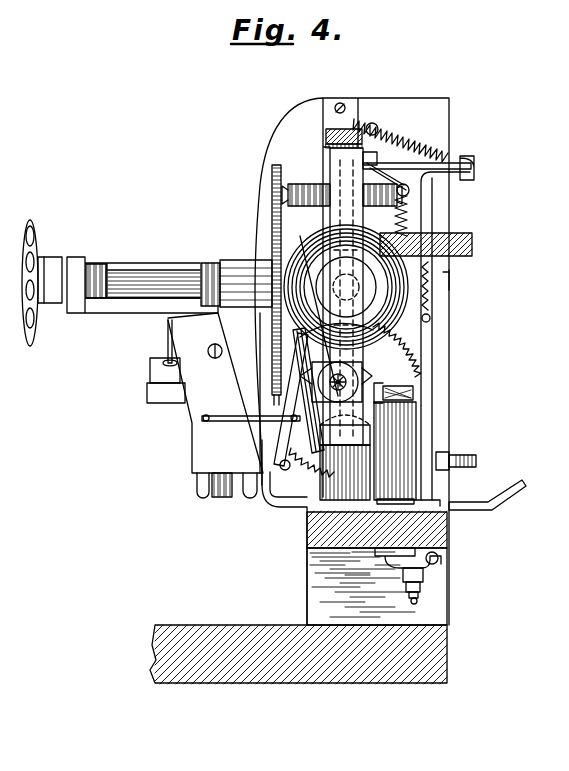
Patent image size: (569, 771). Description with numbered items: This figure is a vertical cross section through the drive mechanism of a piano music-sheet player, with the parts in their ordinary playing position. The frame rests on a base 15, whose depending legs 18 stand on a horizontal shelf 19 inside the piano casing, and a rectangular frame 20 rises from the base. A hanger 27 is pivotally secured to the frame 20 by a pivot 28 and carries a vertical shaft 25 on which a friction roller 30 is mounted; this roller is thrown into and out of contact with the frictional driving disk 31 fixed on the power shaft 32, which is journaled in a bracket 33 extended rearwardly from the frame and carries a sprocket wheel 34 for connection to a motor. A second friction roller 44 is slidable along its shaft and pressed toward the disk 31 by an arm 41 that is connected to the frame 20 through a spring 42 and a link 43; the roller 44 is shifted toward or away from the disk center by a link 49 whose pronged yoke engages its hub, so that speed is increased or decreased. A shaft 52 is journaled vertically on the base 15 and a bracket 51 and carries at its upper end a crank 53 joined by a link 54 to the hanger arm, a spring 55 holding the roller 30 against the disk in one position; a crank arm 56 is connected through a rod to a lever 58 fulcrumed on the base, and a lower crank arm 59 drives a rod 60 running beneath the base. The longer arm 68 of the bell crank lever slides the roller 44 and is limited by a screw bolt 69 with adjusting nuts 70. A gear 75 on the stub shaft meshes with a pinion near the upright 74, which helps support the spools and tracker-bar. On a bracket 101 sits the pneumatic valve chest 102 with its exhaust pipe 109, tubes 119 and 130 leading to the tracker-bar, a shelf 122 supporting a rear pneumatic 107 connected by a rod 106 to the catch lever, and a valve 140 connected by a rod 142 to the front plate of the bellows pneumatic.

The rectangular frame 20 is at (325, 136).
The hanger 27 is at (330, 150).
The friction roller 30 is at (292, 186).
The frictional driving disk 31 is at (273, 188).
The friction roller 44 is at (292, 250).
The bracket 33 is at (84, 257).
The sprocket wheel 34 is at (37, 231).
The power shaft 32 is at (148, 272).
The spring 55 is at (405, 167).
The link 54 is at (396, 182).
The link 43 is at (440, 160).
The crank 53 is at (476, 172).
The spring 42 is at (432, 212).
The bracket 51 is at (471, 244).
The upright 74 is at (450, 276).
The arm 41 is at (398, 313).
The vertical shaft 25 is at (386, 320).
The gear 75 is at (418, 346).
The link 49 is at (366, 362).
The shaft 52 is at (414, 392).
The pivot 28 is at (418, 408).
The longer arm 68 is at (471, 466).
The lever 58 is at (524, 482).
The crank arm 56 is at (445, 526).
The base 15 is at (450, 544).
The depending legs 18 is at (450, 572).
The crank arm 59 is at (308, 574).
The rod 60 is at (446, 559).
The nuts 70 is at (425, 590).
The screw bolt 69 is at (418, 602).
The horizontal shelf 19 is at (450, 650).
The bracket 101 is at (263, 504).
The pneumatic valve chest 102 is at (200, 442).
The rod 106 is at (167, 346).
The pneumatic 107 is at (150, 372).
The shelf 122 is at (147, 393).
The valve 140 is at (212, 398).
The rod 142 is at (228, 420).
The tube 130 is at (248, 478).
The pipe 109 is at (196, 482).
The tube 119 is at (215, 490).